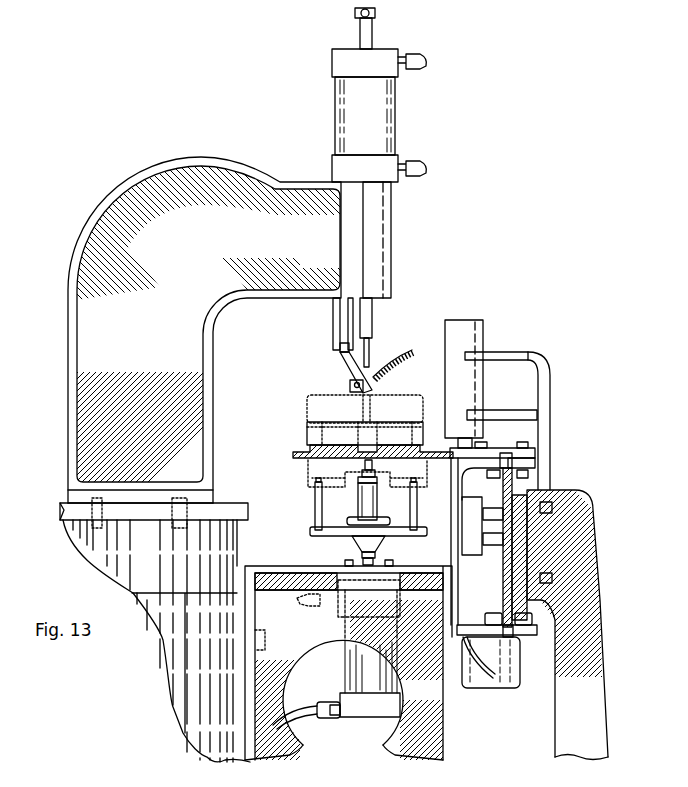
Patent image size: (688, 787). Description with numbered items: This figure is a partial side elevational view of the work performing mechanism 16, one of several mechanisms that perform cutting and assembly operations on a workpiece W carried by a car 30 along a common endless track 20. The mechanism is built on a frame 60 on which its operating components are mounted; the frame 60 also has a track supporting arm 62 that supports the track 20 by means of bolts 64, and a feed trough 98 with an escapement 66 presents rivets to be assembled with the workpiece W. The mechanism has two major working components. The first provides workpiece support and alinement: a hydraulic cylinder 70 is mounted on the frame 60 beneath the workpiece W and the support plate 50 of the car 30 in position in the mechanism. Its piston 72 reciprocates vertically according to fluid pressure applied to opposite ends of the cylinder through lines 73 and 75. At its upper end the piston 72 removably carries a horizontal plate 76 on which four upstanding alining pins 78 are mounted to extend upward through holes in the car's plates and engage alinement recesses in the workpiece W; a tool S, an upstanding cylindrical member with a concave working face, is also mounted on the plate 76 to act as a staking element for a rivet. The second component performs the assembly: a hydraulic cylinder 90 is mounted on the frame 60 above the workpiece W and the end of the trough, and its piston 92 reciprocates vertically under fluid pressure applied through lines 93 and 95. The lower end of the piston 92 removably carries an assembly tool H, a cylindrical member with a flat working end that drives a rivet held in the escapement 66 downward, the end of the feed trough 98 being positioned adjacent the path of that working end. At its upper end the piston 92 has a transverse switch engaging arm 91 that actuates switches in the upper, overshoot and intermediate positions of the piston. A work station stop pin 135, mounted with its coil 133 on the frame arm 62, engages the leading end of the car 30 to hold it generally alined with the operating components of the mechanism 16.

The work performing mechanism 16 is at (197, 130).
The frame 60 is at (76, 410).
The hydraulic cylinder 90 is at (375, 125).
The transverse switch engaging arm 91 is at (375, 13).
The line 93 is at (420, 60).
The line 95 is at (420, 166).
The assembly tool H is at (376, 338).
The piston 92 is at (345, 348).
The escapement 66 is at (349, 383).
The feed trough 98 is at (397, 367).
The workpiece W is at (307, 428).
The support plate 50 is at (293, 455).
The tool S is at (363, 463).
The alining pins 78 is at (412, 508).
The horizontal plate 76 is at (310, 532).
The piston 72 is at (362, 562).
The hydraulic cylinder 70 is at (368, 685).
The line 73 is at (308, 600).
The line 75 is at (277, 725).
The coil 133 is at (473, 335).
The work station stop pin 135 is at (463, 440).
The car 30 is at (530, 462).
The endless track 20 is at (507, 573).
The track supporting arm 62 is at (573, 528).
The bolts 64 is at (547, 503).